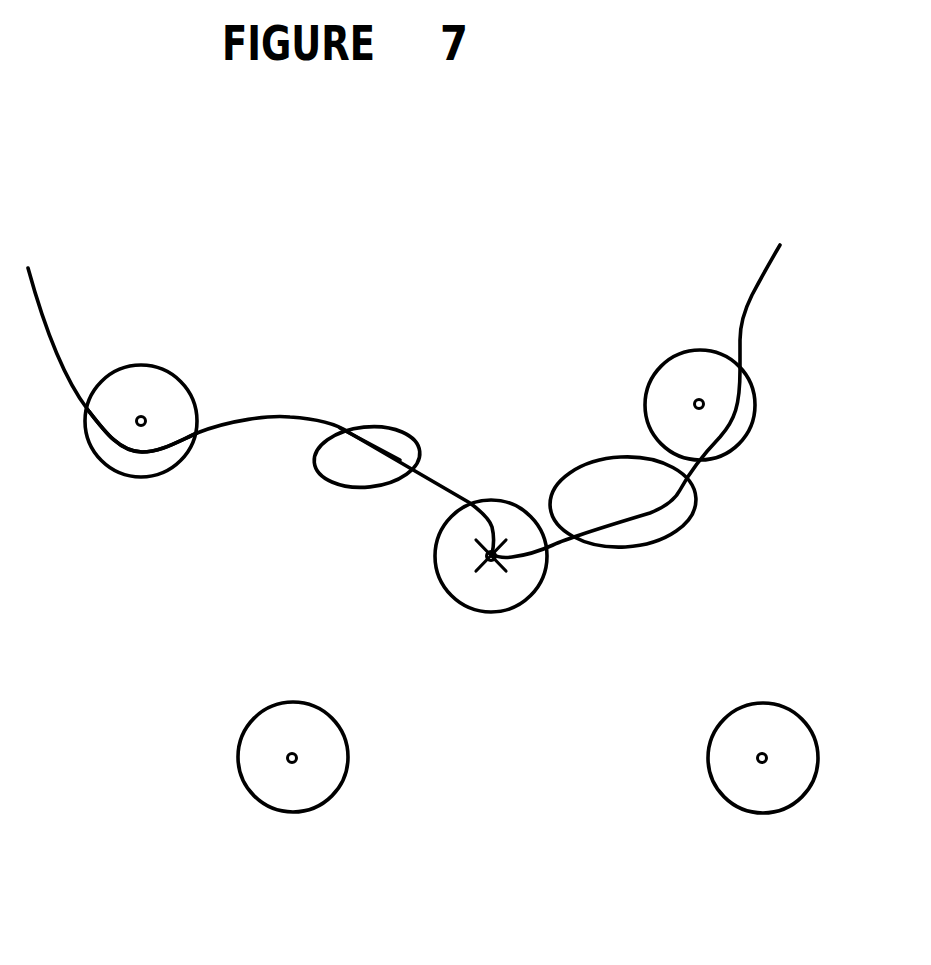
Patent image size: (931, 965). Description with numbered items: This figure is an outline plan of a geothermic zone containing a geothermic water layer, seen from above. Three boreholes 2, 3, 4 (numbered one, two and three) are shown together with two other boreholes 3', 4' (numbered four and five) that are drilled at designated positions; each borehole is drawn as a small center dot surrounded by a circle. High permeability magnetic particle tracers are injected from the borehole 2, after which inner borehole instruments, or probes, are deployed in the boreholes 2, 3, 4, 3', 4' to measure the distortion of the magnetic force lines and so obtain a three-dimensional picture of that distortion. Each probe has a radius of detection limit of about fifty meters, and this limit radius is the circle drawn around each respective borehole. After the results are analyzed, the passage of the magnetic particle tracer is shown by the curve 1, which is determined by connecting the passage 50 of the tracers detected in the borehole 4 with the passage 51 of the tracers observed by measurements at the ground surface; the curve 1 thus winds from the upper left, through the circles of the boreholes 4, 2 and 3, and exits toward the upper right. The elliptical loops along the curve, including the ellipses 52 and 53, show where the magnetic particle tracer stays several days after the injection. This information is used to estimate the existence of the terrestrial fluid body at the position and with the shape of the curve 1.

The curve 1 is at (762, 287).
The borehole 2 is at (468, 613).
The borehole 3 is at (709, 402).
The borehole 4 is at (144, 403).
The passage 50 is at (163, 450).
The passage 51 is at (375, 447).
The thread loop 52 is at (658, 548).
The thread loop 53 is at (413, 440).
The borehole 4' is at (312, 757).
The borehole 3' is at (733, 758).